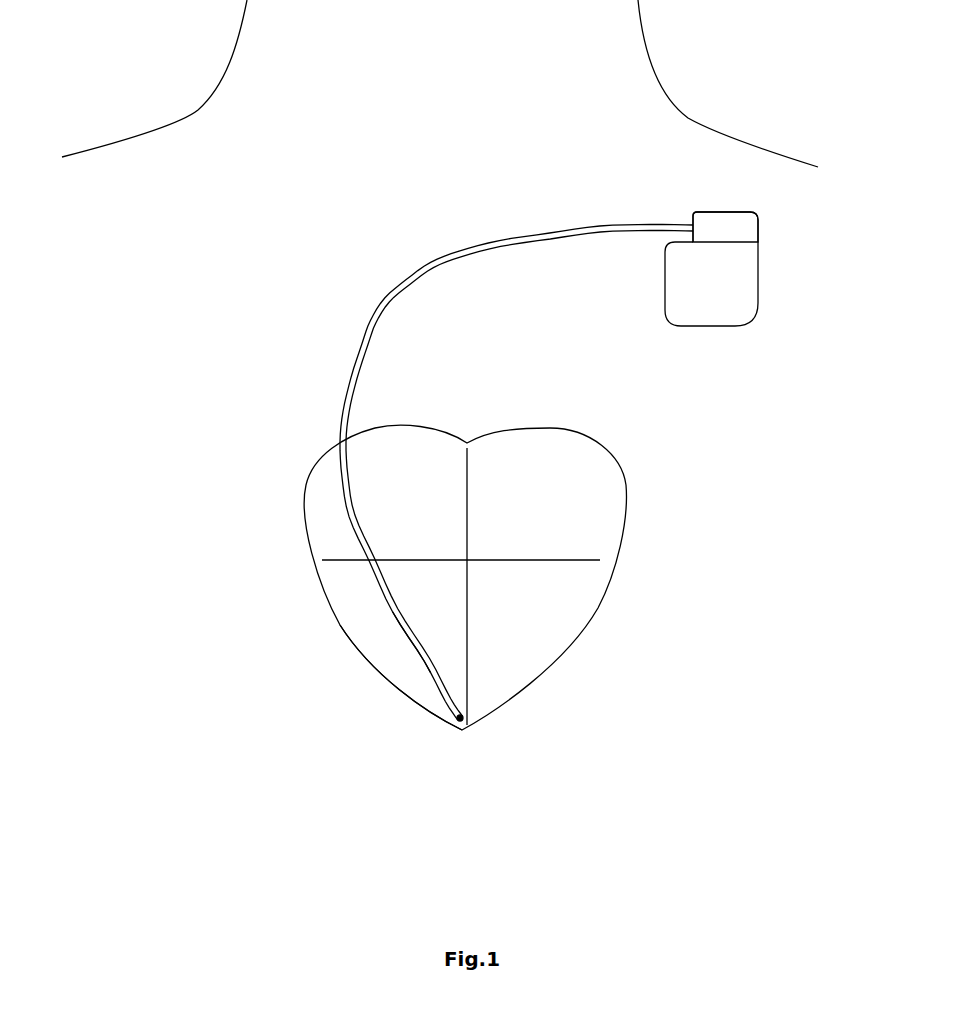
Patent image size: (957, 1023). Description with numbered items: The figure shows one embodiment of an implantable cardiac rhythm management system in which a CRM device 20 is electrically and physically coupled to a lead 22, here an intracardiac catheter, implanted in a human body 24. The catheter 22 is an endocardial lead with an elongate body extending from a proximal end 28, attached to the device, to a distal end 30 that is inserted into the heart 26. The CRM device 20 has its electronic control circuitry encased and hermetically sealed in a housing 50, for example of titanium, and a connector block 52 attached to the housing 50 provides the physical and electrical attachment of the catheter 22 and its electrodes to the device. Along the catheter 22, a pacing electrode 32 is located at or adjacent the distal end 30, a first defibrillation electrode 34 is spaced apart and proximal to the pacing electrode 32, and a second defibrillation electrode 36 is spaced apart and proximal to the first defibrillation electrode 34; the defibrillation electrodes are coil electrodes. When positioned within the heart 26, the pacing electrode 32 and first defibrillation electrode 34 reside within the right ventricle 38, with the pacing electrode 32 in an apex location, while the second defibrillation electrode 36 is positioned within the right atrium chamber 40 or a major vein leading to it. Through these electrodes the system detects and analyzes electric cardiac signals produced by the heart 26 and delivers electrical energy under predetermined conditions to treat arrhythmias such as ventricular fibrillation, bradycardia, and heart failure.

The CRM device 20 is at (743, 277).
The lead 22 is at (471, 506).
The human body 24 is at (165, 212).
The heart 26 is at (473, 577).
The proximal end 28 is at (718, 212).
The distal end 30 is at (505, 760).
The pacing electrode 32 is at (467, 717).
The first defibrillation electrode 34 is at (425, 663).
The second defibrillation electrode 36 is at (335, 455).
The right ventricle 38 is at (441, 603).
The right atrium chamber 40 is at (426, 535).
The housing 50 is at (730, 305).
The connector block 52 is at (737, 230).